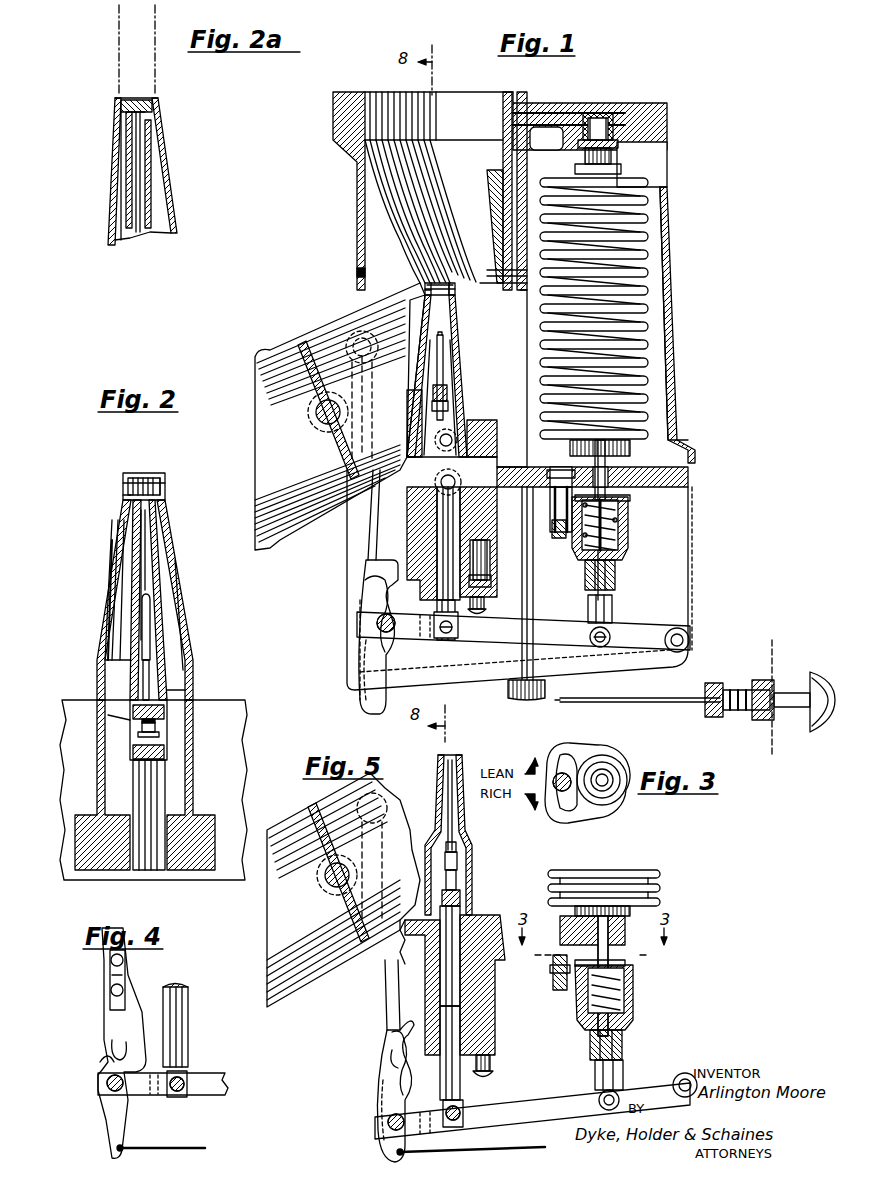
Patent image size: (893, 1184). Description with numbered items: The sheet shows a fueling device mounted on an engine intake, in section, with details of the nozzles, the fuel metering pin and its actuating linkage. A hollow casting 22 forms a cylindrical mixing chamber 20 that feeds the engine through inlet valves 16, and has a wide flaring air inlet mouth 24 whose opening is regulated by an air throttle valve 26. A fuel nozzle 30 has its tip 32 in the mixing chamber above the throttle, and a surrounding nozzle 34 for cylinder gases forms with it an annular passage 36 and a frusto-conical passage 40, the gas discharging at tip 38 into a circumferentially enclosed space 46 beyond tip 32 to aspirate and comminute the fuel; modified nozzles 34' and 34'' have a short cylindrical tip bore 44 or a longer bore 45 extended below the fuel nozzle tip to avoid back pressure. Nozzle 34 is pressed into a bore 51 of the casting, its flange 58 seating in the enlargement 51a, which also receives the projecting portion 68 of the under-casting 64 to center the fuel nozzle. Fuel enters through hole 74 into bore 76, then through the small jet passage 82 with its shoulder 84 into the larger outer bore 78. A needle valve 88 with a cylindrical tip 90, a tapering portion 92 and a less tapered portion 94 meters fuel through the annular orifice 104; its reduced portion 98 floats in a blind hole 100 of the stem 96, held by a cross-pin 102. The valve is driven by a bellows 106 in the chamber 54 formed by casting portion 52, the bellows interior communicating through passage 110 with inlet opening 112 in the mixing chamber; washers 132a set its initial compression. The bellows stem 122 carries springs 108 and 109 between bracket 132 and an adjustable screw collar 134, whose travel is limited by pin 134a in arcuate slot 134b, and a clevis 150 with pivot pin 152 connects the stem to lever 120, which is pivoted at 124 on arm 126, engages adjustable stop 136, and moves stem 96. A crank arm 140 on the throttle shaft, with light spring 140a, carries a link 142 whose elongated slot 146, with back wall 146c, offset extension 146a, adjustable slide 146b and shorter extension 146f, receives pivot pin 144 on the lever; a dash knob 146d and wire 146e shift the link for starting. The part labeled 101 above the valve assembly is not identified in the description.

In FIG. 1, the inlet valves 16 is at (410, 225).
In FIG. 1, the mixing chamber 20 is at (385, 95).
In FIG. 1, the hollow casting 22 is at (357, 163).
In FIG. 1, the air inlet mouth 24 is at (262, 418).
In FIG. 1, the air throttle valve 26 is at (352, 470).
In FIG. 5, the air throttle valve 26 is at (350, 935).
In FIG. 2A, the fuel nozzle 30 is at (152, 182).
In FIG. 1, the fuel nozzle 30 is at (457, 318).
In FIG. 5, the fuel nozzle 30 is at (466, 822).
In FIG. 1, the fuel nozzle tip 32 is at (447, 285).
In FIG. 1, the cylinder gas nozzle 34 is at (415, 361).
In FIG. 2, the cylinder gas nozzle 34' is at (161, 600).
In FIG. 2A, the cylinder gas nozzle 34'' is at (162, 171).
In FIG. 1, the annular passage 36 is at (425, 290).
In FIG. 2, the annular passage 36 is at (123, 490).
In FIG. 1, the tip of cylinder gas nozzle 38 is at (435, 284).
In FIG. 2, the tip of cylinder gas nozzle 38 is at (160, 474).
In FIG. 1, the frusto-conical passage 40 is at (452, 362).
In FIG. 2, the frusto-conical passage 40 is at (112, 572).
In FIG. 2, the cylindrical tip bore 44 is at (167, 487).
In FIG. 2A, the extended cylindrical tip bore 45 is at (148, 108).
In FIG. 1, the enclosed space 46 is at (440, 282).
In FIG. 2, the enclosed space 46 is at (140, 475).
In FIG. 1, the bore 51 is at (425, 420).
In FIG. 1, the enlargement of bore 51a is at (402, 490).
In FIG. 1, the casting portion 52 is at (672, 315).
In FIG. 1, the bellows receiving chamber 54 is at (677, 365).
In FIG. 1, the flange 58 is at (495, 440).
In FIG. 2, the flange 58 is at (90, 830).
In FIG. 1, the under-casting 64 is at (420, 562).
In FIG. 5, the under-casting 64 is at (490, 924).
In FIG. 2, the projecting portion 68 is at (220, 842).
In FIG. 1, the hole 74 is at (470, 500).
In FIG. 1, the bore 76 is at (432, 530).
In FIG. 2, the bore 76 is at (160, 712).
In FIG. 5, the bore 76 is at (462, 970).
In FIG. 2, the outer bore portion 78 is at (155, 580).
In FIG. 2, the fuel jet passage 82 is at (100, 680).
In FIG. 2, the shoulder 84 is at (108, 716).
In FIG. 1, the needle valve 88 is at (462, 392).
In FIG. 2, the needle valve 88 is at (176, 690).
In FIG. 1, the cylindrical tip portion 90 is at (444, 345).
In FIG. 2, the cylindrical tip portion 90 is at (150, 610).
In FIG. 5, the cylindrical tip portion 90 is at (462, 848).
In FIG. 2, the tapering portion 92 is at (150, 636).
In FIG. 2, the lower tapered portion 94 is at (112, 656).
In FIG. 1, the valve stem 96 is at (437, 590).
In FIG. 2, the valve stem 96 is at (150, 850).
In FIG. 4, the valve stem 96 is at (188, 1012).
In FIG. 5, the valve stem 96 is at (462, 1020).
In FIG. 2, the reduced lower portion 98 is at (160, 752).
In FIG. 2, the blind hole 100 is at (160, 730).
In FIG. 5, the float plates 101 is at (662, 872).
In FIG. 2, the cross-pin 102 is at (162, 736).
In FIG. 2, the annular fuel passage 104 is at (188, 666).
In FIG. 1, the bellows 106 is at (650, 410).
In FIG. 1, the spring 108 is at (630, 498).
In FIG. 5, the spring 108 is at (630, 982).
In FIG. 1, the spring 109 is at (630, 513).
In FIG. 1, the passage 110 is at (560, 115).
In FIG. 1, the inlet opening 112 is at (487, 282).
In FIG. 1, the lever 120 is at (488, 634).
In FIG. 5, the lever 120 is at (519, 1103).
In FIG. 1, the bellows stem 122 is at (608, 458).
In FIG. 5, the bellows stem 122 is at (630, 920).
In FIG. 1, the pivot 124 is at (690, 640).
In FIG. 5, the pivot 124 is at (686, 1073).
In FIG. 1, the arm 126 is at (698, 560).
In FIG. 1, the bracket 132 is at (575, 470).
In FIG. 1, the washers 132a is at (608, 160).
In FIG. 1, the adjustable screw collar 134 is at (580, 560).
In FIG. 5, the adjustable screw collar 134 is at (636, 1012).
In FIG. 1, the pin 134a is at (556, 530).
In FIG. 5, the pin 134a is at (560, 975).
In FIG. 3, the pin 134a is at (556, 800).
In FIG. 3, the arcuate slot 134b is at (558, 752).
In FIG. 1, the adjustable stop 136 is at (480, 610).
In FIG. 5, the adjustable stop 136 is at (493, 1060).
In FIG. 1, the crank arm 140 is at (328, 412).
In FIG. 5, the crank arm 140 is at (318, 843).
In FIG. 1, the light spring 140a is at (362, 362).
In FIG. 1, the link 142 is at (372, 550).
In FIG. 5, the link 142 is at (385, 995).
In FIG. 1, the pivot pin 144 is at (390, 632).
In FIG. 4, the pivot pin 144 is at (120, 1095).
In FIG. 5, the pivot pin 144 is at (386, 1126).
In FIG. 1, the elongated slot 146 is at (370, 593).
In FIG. 4, the elongated slot 146 is at (128, 1028).
In FIG. 5, the elongated slot 146 is at (398, 1036).
In FIG. 1, the offset slot extension 146a is at (362, 656).
In FIG. 5, the offset slot extension 146a is at (385, 1090).
In FIG. 4, the slide 146b is at (110, 998).
In FIG. 4, the back wall of slot 146c is at (130, 1050).
In FIG. 5, the back wall of slot 146c is at (395, 1058).
In FIG. 1, the dash knob 146d is at (822, 672).
In FIG. 1, the wire 146e is at (655, 698).
In FIG. 4, the wire 146e is at (180, 1142).
In FIG. 5, the wire 146e is at (520, 1147).
In FIG. 4, the shorter slot extension 146f is at (112, 1066).
In FIG. 1, the clevis 150 is at (612, 613).
In FIG. 5, the clevis 150 is at (625, 1065).
In FIG. 1, the pivot pin 152 is at (595, 645).